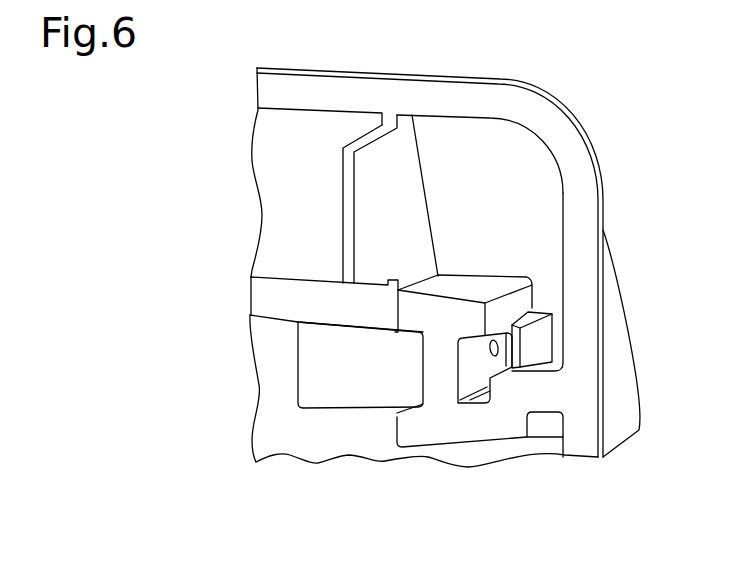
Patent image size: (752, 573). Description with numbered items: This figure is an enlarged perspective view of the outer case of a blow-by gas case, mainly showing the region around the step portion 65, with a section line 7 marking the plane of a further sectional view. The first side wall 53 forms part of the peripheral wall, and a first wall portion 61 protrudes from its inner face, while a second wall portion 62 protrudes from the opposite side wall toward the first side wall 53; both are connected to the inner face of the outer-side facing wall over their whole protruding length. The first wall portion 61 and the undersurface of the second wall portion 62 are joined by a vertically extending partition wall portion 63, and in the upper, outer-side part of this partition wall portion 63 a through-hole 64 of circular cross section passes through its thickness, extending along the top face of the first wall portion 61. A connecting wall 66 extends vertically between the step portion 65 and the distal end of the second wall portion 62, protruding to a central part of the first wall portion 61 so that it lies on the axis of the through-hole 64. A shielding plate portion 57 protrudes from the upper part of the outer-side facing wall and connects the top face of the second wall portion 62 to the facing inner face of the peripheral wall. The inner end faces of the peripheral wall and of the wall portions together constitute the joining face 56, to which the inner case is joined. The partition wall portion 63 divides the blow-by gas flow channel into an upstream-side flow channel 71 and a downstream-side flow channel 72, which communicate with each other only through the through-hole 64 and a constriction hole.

The section line VII-VII 7 is at (390, 67).
The first side wall 53 is at (562, 212).
The joining face 56 is at (471, 83).
The shielding plate portion 57 is at (399, 147).
The first wall portion 61 is at (502, 441).
The second wall portion 62 is at (290, 277).
The partition wall portion 63 is at (420, 352).
The through-hole 64 is at (493, 362).
The step portion 65 is at (458, 400).
The connecting wall 66 is at (552, 333).
The upstream-side flow channel 71 is at (278, 403).
The downstream-side flow channel 72 is at (504, 151).